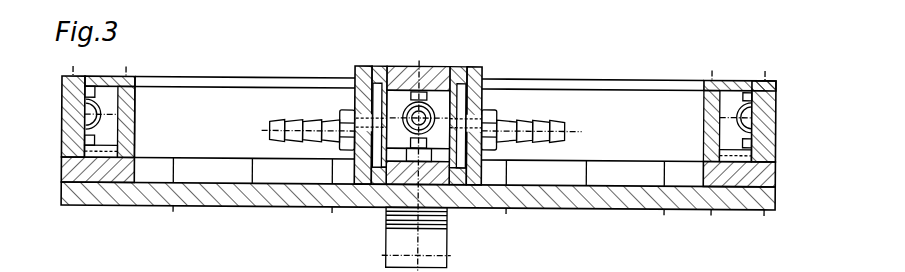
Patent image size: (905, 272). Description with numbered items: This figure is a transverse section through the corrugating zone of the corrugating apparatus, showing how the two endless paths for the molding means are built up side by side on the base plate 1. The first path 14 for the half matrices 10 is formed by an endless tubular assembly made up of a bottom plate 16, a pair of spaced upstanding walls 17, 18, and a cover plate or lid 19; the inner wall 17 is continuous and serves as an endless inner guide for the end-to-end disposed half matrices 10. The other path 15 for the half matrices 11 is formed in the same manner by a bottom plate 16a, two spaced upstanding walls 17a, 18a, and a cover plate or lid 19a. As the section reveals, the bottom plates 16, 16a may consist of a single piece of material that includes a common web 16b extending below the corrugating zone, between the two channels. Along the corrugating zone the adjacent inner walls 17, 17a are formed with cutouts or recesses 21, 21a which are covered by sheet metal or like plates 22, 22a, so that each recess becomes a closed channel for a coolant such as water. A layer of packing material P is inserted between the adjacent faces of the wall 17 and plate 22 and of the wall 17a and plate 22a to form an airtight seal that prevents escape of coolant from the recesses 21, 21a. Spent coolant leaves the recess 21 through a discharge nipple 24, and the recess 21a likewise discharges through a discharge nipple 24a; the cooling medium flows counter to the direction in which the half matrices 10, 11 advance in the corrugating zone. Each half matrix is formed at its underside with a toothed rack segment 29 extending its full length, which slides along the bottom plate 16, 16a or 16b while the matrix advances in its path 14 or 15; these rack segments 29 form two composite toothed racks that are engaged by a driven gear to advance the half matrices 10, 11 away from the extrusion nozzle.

The base plate 1 is at (732, 202).
The half matrices 10 is at (103, 84).
The half matrices 11 is at (433, 97).
The endless path 14 is at (125, 84).
The endless path 15 is at (700, 147).
The bottom plate 16 is at (62, 168).
The bottom plate 16a is at (767, 170).
The common web 16b is at (388, 208).
The inner wall 17 is at (137, 127).
The upstanding wall 17a is at (458, 69).
The upstanding wall 18 is at (62, 125).
The upstanding wall 18a is at (767, 125).
The cover plate or lid 19 is at (72, 79).
The cover plate or lid 19a is at (747, 73).
The recess 21 is at (352, 70).
The recess 21a is at (487, 75).
The plate 22 is at (353, 92).
The plate 22a is at (485, 97).
The discharge nipple 24 is at (270, 124).
The discharge nipple 24a is at (567, 121).
The toothed rack segment 29 is at (373, 181).
The packing material P is at (380, 68).